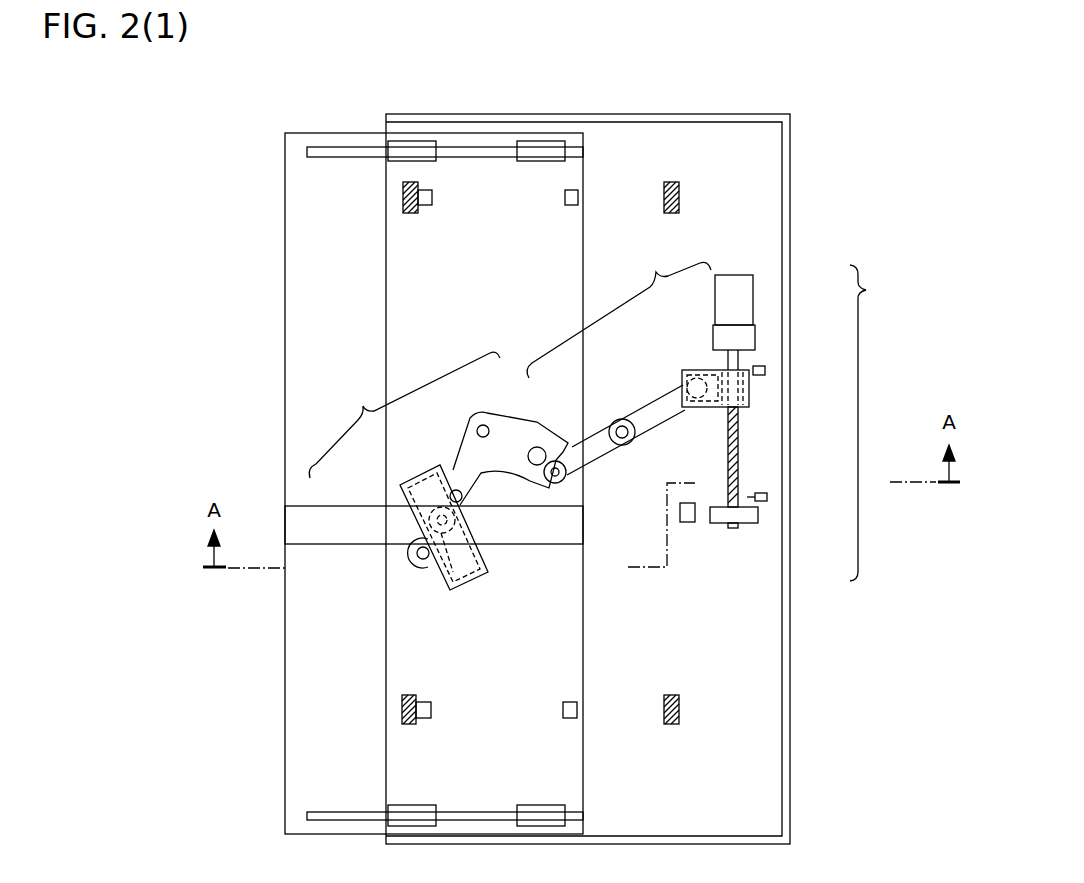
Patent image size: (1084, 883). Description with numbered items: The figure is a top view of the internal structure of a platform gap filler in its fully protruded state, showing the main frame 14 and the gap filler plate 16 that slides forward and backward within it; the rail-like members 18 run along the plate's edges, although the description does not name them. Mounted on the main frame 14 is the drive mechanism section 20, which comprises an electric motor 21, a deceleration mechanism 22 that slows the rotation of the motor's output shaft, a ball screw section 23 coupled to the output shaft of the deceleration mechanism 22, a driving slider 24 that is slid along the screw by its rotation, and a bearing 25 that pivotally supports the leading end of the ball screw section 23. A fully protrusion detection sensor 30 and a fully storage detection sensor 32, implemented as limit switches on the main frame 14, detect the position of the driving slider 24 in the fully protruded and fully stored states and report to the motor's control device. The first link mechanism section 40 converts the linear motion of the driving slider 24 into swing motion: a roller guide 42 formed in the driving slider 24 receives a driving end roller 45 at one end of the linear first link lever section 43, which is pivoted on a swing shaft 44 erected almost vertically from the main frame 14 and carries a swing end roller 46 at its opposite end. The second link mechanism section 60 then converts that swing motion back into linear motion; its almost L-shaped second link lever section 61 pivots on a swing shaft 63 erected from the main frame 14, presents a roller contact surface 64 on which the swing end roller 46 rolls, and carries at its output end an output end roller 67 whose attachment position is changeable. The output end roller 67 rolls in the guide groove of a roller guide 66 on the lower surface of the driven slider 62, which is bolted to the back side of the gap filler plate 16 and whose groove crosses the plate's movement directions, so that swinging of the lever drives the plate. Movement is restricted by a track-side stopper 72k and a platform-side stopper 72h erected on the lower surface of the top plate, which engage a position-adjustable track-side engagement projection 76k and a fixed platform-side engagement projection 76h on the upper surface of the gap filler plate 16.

The main frame 14 is at (750, 121).
The gap filler plate 16 is at (285, 356).
The guide rail 18 is at (405, 141).
The drive mechanism section 20 is at (875, 423).
The electric motor 21 is at (753, 297).
The deceleration mechanism 22 is at (755, 340).
The ball screw section 23 is at (738, 432).
The driving slider 24 is at (722, 372).
The bearing 25 is at (747, 518).
The fully protrusion detection sensor 30 is at (765, 370).
The fully storage detection sensor 32 is at (768, 499).
The first link mechanism section 40 is at (619, 312).
The roller guide 42 is at (707, 380).
The first link lever section 43 is at (653, 401).
The swing shaft 44 is at (628, 438).
The driving end roller 45 is at (682, 373).
The swing end roller 46 is at (556, 460).
The second link mechanism section 60 is at (404, 415).
The second link lever section 61 is at (468, 446).
The driven slider 62 is at (348, 504).
The swing shaft 63 is at (480, 426).
The roller contact surface 64 is at (531, 448).
The roller guide 66 is at (421, 487).
The output end roller 67 is at (447, 571).
The track-side stopper 72k is at (403, 205).
The platform-side stopper 72h is at (681, 205).
The track-side engagement projection 76k is at (428, 205).
The platform-side engagement projection 76h is at (567, 205).